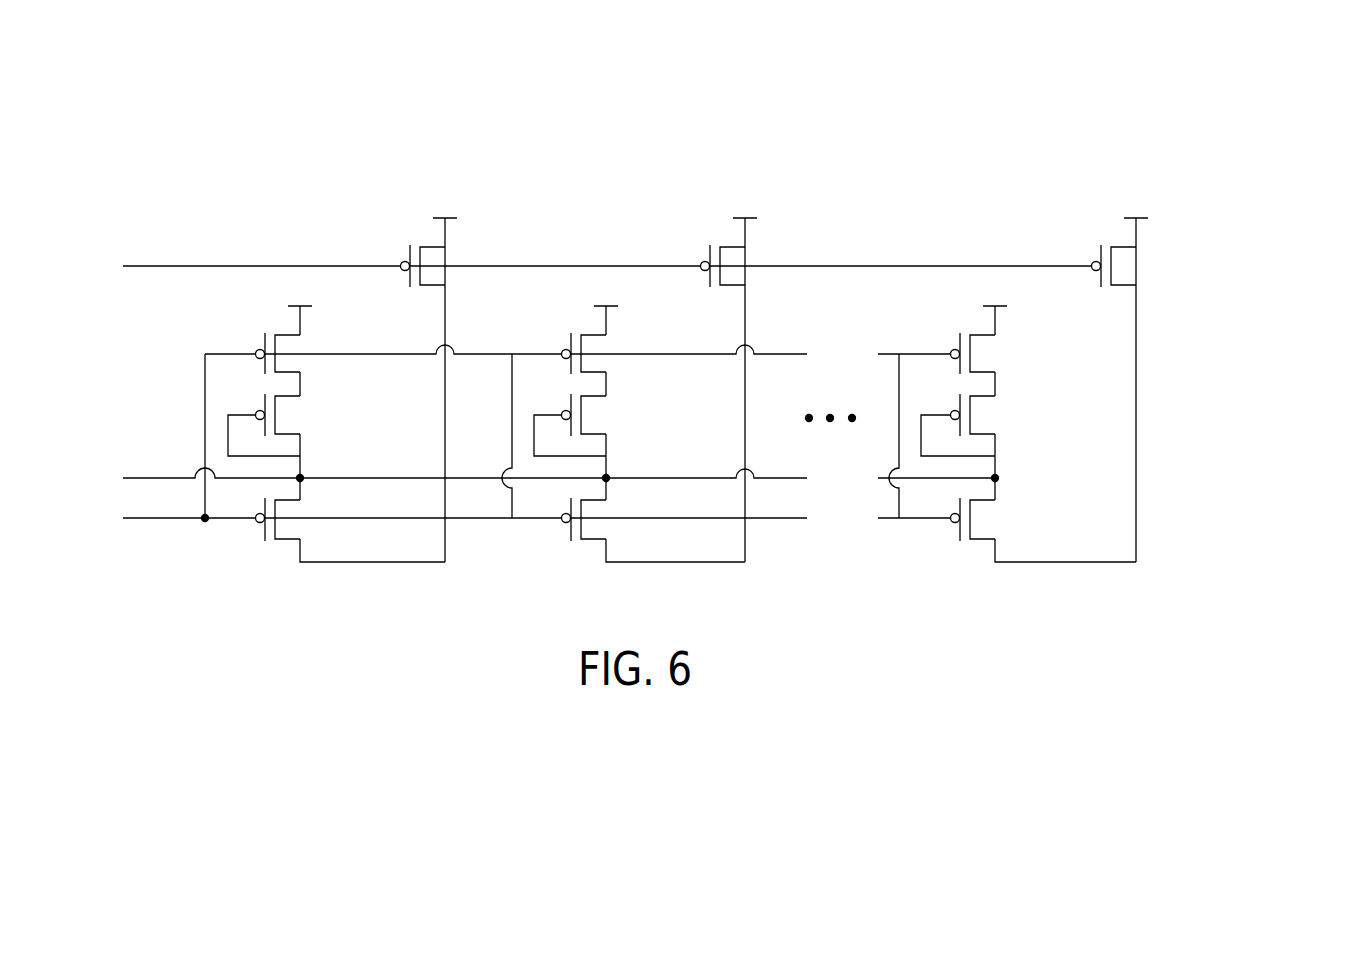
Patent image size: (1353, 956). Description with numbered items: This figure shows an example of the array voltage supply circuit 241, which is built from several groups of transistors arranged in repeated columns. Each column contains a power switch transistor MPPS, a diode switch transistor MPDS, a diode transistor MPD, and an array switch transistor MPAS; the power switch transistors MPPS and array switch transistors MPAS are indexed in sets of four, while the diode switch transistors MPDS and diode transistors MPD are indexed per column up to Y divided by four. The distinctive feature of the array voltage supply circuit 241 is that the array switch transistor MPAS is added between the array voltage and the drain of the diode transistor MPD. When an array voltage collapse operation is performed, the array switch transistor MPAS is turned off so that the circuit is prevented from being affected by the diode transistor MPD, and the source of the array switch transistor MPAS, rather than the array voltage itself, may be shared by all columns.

The array voltage supply circuit 241 is at (702, 83).
The power switch transistor MPPS is at (853, 390).
The diode switch transistor MPDS is at (692, 340).
The diode transistor MPD is at (675, 414).
The array switch transistor MPAS is at (696, 498).